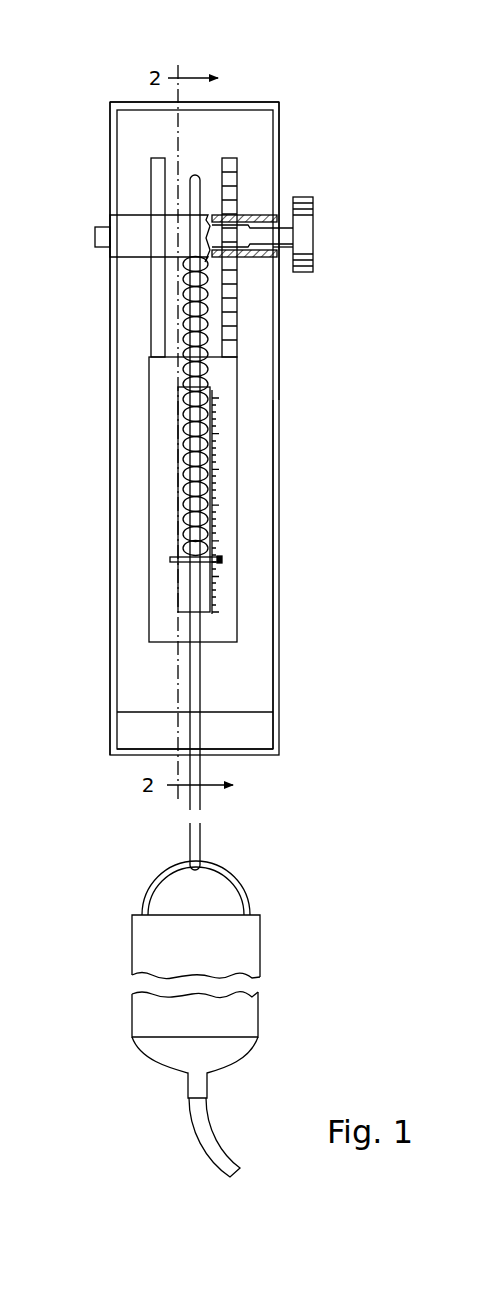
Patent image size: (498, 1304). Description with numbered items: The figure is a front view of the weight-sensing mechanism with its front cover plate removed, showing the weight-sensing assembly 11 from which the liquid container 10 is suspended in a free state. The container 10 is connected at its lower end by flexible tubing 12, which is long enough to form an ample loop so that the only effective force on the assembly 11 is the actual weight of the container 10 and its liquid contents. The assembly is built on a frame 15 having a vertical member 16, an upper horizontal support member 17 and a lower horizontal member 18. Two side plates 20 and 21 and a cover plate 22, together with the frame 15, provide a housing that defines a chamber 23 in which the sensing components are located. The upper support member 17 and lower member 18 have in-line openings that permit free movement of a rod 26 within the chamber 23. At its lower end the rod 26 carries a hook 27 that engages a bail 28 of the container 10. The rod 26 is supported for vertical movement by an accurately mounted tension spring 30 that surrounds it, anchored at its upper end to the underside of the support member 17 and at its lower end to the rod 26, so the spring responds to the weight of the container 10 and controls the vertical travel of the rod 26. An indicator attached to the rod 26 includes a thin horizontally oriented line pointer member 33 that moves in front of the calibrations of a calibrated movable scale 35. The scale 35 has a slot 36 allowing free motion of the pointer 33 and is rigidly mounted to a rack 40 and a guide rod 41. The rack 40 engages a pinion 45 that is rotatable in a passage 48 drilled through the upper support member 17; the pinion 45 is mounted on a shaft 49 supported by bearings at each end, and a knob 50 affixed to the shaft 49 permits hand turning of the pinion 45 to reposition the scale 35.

The liquid container 10 is at (264, 982).
The weight-sensing assembly 11 is at (301, 423).
The flexible tubing 12 is at (217, 1147).
The frame 15 is at (281, 365).
The vertical member 16 is at (258, 532).
The upper horizontal support member 17 is at (120, 220).
The lower horizontal member 18 is at (258, 735).
The side plate 20 is at (110, 138).
The side plate 21 is at (275, 148).
The cover plate 22 is at (223, 103).
The chamber 23 is at (250, 676).
The rod 26 is at (195, 700).
The hook 27 is at (197, 853).
The bail 28 is at (238, 885).
The tension spring 30 is at (205, 492).
The line pointer member 33 is at (222, 558).
The calibrated movable scale 35 is at (158, 442).
The slot 36 is at (182, 517).
The rack 40 is at (230, 322).
The guide rod 41 is at (155, 300).
The pinion 45 is at (228, 232).
The passage 48 is at (277, 252).
The shaft 49 is at (285, 235).
The knob 50 is at (313, 202).